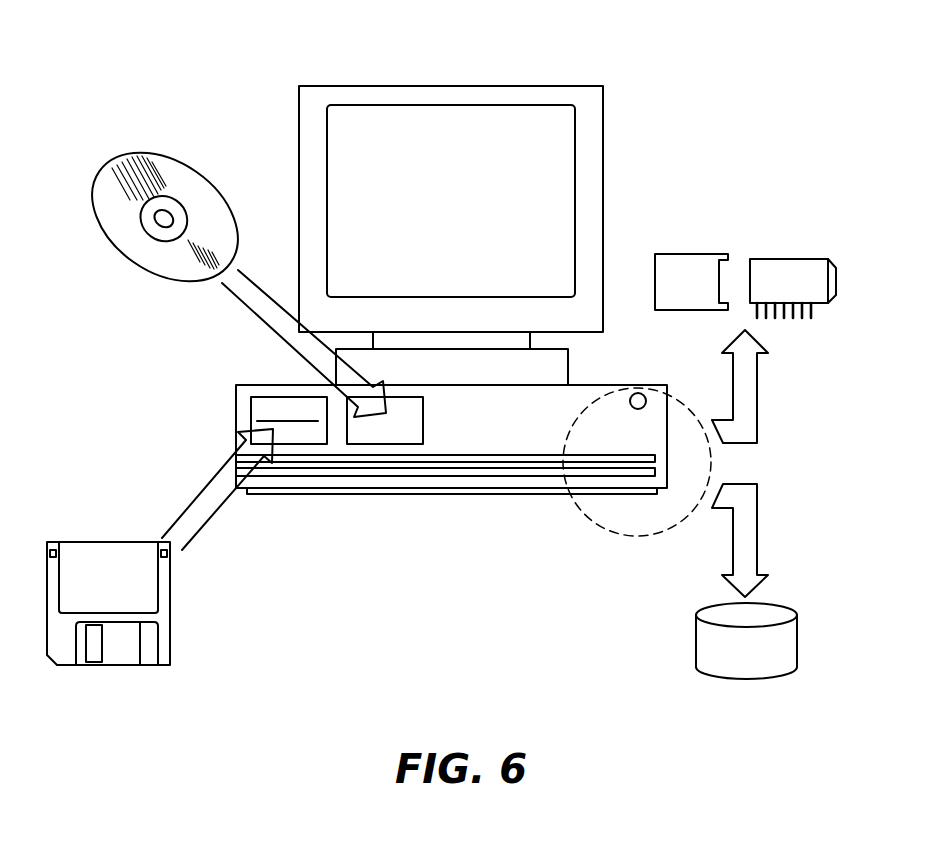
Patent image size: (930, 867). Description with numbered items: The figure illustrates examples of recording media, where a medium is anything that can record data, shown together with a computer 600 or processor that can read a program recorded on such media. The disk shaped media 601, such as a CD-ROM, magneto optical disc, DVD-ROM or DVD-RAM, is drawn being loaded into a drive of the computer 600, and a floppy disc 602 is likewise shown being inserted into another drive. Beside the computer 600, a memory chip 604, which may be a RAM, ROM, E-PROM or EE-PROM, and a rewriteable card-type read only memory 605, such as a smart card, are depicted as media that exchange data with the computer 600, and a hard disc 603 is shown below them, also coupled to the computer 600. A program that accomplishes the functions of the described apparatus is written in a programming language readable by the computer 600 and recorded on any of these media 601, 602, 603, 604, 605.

The computer 600 is at (300, 128).
The disk shaped media 601 is at (139, 168).
The floppy disc 602 is at (122, 647).
The hard disc 603 is at (745, 677).
The memory chip 604 is at (789, 260).
The rewriteable card-type read only memory 605 is at (690, 255).